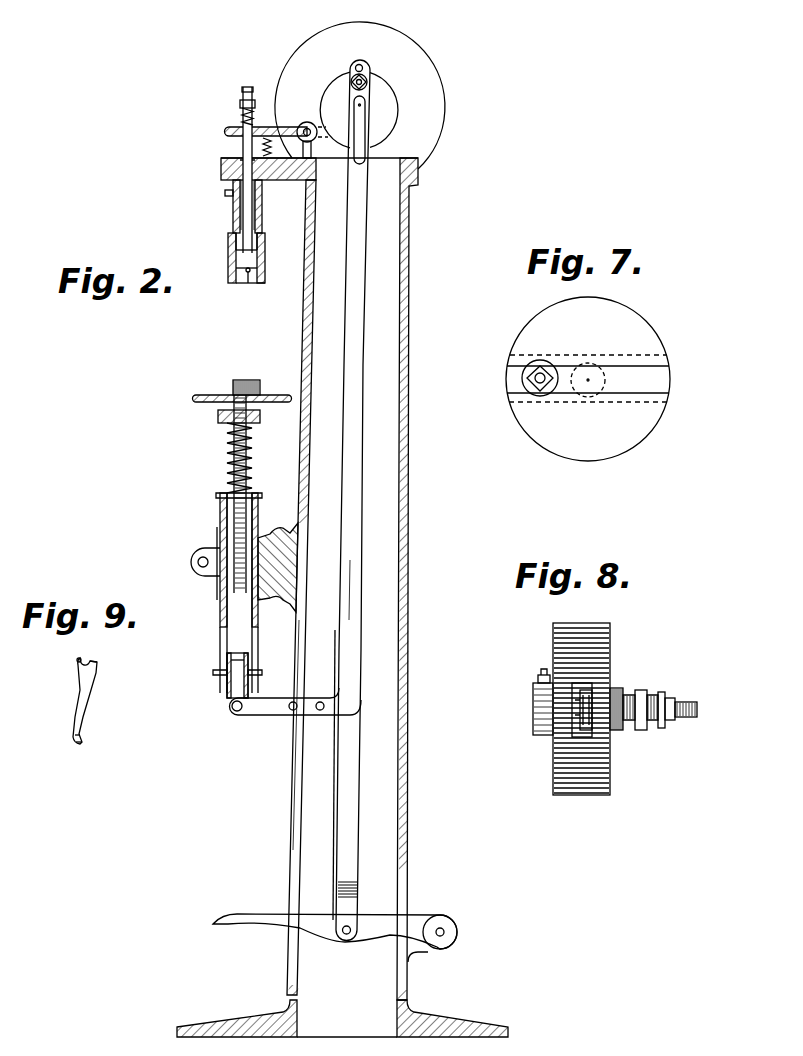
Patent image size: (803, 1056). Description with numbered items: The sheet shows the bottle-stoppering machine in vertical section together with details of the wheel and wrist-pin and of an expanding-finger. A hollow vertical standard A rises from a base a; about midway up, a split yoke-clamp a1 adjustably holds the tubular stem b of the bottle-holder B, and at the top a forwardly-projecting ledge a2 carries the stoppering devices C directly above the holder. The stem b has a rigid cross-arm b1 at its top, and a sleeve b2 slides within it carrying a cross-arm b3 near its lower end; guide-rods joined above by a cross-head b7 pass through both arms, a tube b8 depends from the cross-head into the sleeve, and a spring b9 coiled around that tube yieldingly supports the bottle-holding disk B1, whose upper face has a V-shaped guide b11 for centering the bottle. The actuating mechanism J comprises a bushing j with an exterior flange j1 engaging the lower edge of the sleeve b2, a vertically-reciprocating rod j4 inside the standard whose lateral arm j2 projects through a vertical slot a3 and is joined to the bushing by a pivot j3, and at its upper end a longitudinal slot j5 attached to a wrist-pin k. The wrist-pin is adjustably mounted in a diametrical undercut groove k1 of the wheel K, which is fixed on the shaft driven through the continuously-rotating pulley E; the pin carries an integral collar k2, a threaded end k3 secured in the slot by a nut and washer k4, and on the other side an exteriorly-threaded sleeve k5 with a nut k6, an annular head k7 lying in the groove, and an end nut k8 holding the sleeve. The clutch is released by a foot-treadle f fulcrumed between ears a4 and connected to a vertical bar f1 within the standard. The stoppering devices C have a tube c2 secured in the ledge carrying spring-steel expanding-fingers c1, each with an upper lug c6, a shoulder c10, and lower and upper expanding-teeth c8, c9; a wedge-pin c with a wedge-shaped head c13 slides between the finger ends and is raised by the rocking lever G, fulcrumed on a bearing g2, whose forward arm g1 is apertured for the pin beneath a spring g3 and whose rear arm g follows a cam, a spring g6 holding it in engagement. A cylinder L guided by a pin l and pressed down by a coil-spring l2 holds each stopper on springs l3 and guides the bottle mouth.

In FIG. 2, the standard A is at (327, 579).
In FIG. 2, the base a is at (445, 1026).
In FIG. 2, the split yoke-clamp a1 is at (205, 569).
In FIG. 2, the ledge a2 is at (300, 181).
In FIG. 2, the vertical slot a3 is at (295, 775).
In FIG. 2, the ears a4 is at (436, 950).
In FIG. 2, the bottle-holder B is at (278, 556).
In FIG. 2, the bottle-holding disk B1 is at (222, 396).
In FIG. 2, the tubular stem b is at (220, 622).
In FIG. 2, the cross-arm b1 is at (220, 499).
In FIG. 2, the sleeve b2 is at (221, 632).
In FIG. 2, the cross-arm b3 is at (256, 677).
In FIG. 2, the cross-head b7 is at (220, 418).
In FIG. 2, the tube b8 is at (227, 458).
In FIG. 2, the spring b9 is at (248, 462).
In FIG. 2, the V-shaped guide b11 is at (262, 390).
In FIG. 2, the stoppering devices C is at (234, 206).
In FIG. 2, the wedge-pin c is at (250, 88).
In FIG. 2, the expanding-fingers c1 is at (262, 252).
In FIG. 9, the expanding-fingers c1 is at (89, 700).
In FIG. 2, the tube c2 is at (235, 168).
In FIG. 9, the lug c6 is at (83, 658).
In FIG. 9, the lower expanding-tooth c8 is at (79, 745).
In FIG. 9, the upper expanding-tooth c9 is at (80, 735).
In FIG. 9, the shoulder c10 is at (97, 667).
In FIG. 2, the wedge-shaped head c13 is at (262, 270).
In FIG. 2, the pulley E is at (424, 52).
In FIG. 2, the foot-treadle f is at (224, 926).
In FIG. 2, the vertical bar f1 is at (362, 806).
In FIG. 2, the rocking lever G is at (303, 122).
In FIG. 2, the rear arm g is at (312, 122).
In FIG. 2, the forward arm g1 is at (232, 128).
In FIG. 2, the bearing g2 is at (312, 159).
In FIG. 2, the spring g3 is at (243, 102).
In FIG. 2, the spring g6 is at (267, 137).
In FIG. 2, the actuating mechanism J is at (354, 500).
In FIG. 2, the bushing j is at (248, 682).
In FIG. 2, the exterior flange j1 is at (227, 683).
In FIG. 2, the lateral arm j2 is at (253, 719).
In FIG. 2, the pivot j3 is at (232, 707).
In FIG. 2, the reciprocating rod j4 is at (355, 590).
In FIG. 2, the slot j5 is at (368, 157).
In FIG. 2, the wheel K is at (359, 110).
In FIG. 7, the wheel K is at (588, 379).
In FIG. 8, the wheel K is at (569, 709).
In FIG. 2, the wrist-pin k is at (366, 78).
In FIG. 7, the wrist-pin k is at (523, 385).
In FIG. 8, the wrist-pin k is at (697, 710).
In FIG. 7, the undercut groove k1 is at (610, 372).
In FIG. 8, the undercut groove k1 is at (576, 690).
In FIG. 8, the collar k2 is at (641, 690).
In FIG. 8, the threaded end k3 is at (661, 694).
In FIG. 7, the nut and washer k4 is at (541, 389).
In FIG. 8, the nut and washer k4 is at (673, 700).
In FIG. 8, the exteriorly-threaded sleeve k5 is at (629, 722).
In FIG. 8, the nut k6 is at (616, 732).
In FIG. 8, the annular head k7 is at (586, 733).
In FIG. 8, the nut k8 is at (578, 714).
In FIG. 2, the cylinder L is at (228, 258).
In FIG. 2, the pin or screw l is at (250, 301).
In FIG. 2, the coil-spring l2 is at (242, 178).
In FIG. 2, the springs l3 is at (256, 283).